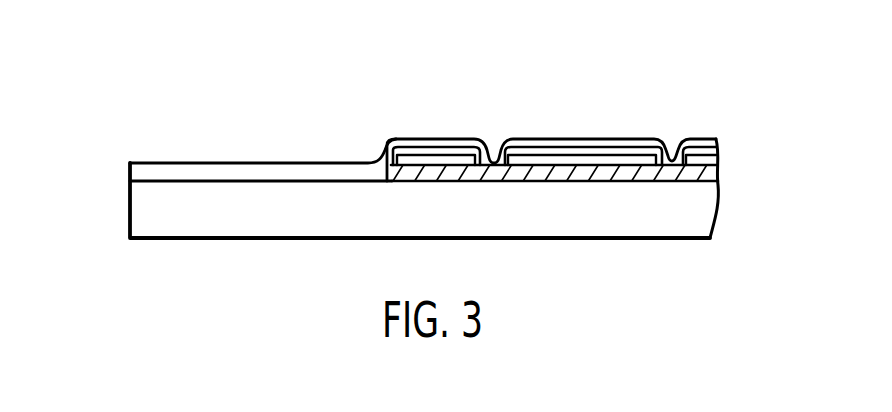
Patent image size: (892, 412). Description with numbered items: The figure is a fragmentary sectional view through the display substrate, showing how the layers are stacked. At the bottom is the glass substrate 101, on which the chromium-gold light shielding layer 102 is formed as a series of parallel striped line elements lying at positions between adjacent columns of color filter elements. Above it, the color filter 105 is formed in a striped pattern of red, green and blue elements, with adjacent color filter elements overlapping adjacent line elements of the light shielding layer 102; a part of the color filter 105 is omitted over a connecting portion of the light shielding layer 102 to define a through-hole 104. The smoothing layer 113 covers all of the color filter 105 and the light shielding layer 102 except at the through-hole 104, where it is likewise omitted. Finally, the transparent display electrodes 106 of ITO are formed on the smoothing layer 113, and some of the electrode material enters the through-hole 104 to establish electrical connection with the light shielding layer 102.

The glass substrate 101 is at (135, 202).
The light shielding layer 102 is at (533, 183).
The through-hole 104 is at (493, 150).
The color filter 105 is at (393, 143).
The transparent display electrode 106 is at (165, 167).
The smoothing layer 113 is at (588, 146).